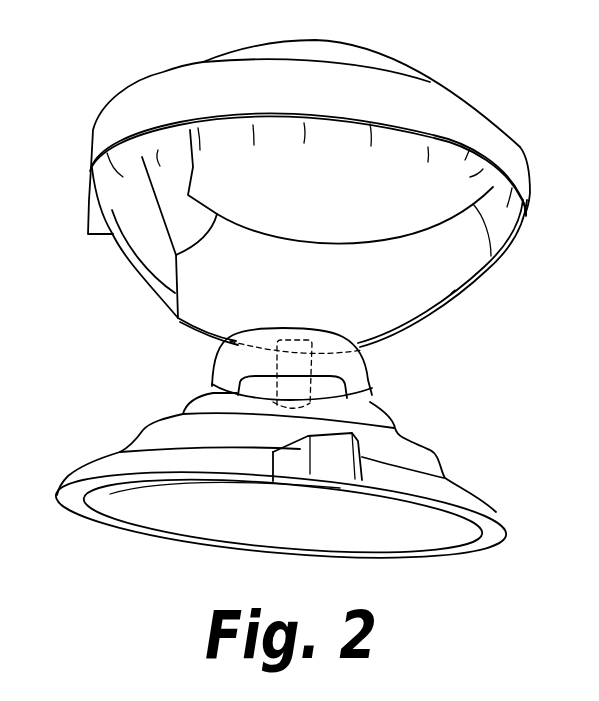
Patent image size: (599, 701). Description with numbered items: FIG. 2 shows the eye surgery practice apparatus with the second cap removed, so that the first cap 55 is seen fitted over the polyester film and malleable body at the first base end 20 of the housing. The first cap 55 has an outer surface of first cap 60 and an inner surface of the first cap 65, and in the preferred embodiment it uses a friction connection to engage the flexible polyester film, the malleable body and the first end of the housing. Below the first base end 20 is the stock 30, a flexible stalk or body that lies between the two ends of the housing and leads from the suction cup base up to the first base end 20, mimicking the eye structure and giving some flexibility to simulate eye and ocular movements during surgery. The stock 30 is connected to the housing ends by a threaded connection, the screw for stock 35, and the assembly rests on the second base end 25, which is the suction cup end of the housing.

The first base end 20 is at (470, 220).
The second base end 25 is at (463, 497).
The stock 30 is at (348, 365).
The screw for stock 35 is at (300, 386).
The first cap 55 is at (463, 122).
The outer surface of first cap 60 is at (163, 73).
The inner surface of the first cap 65 is at (100, 163).